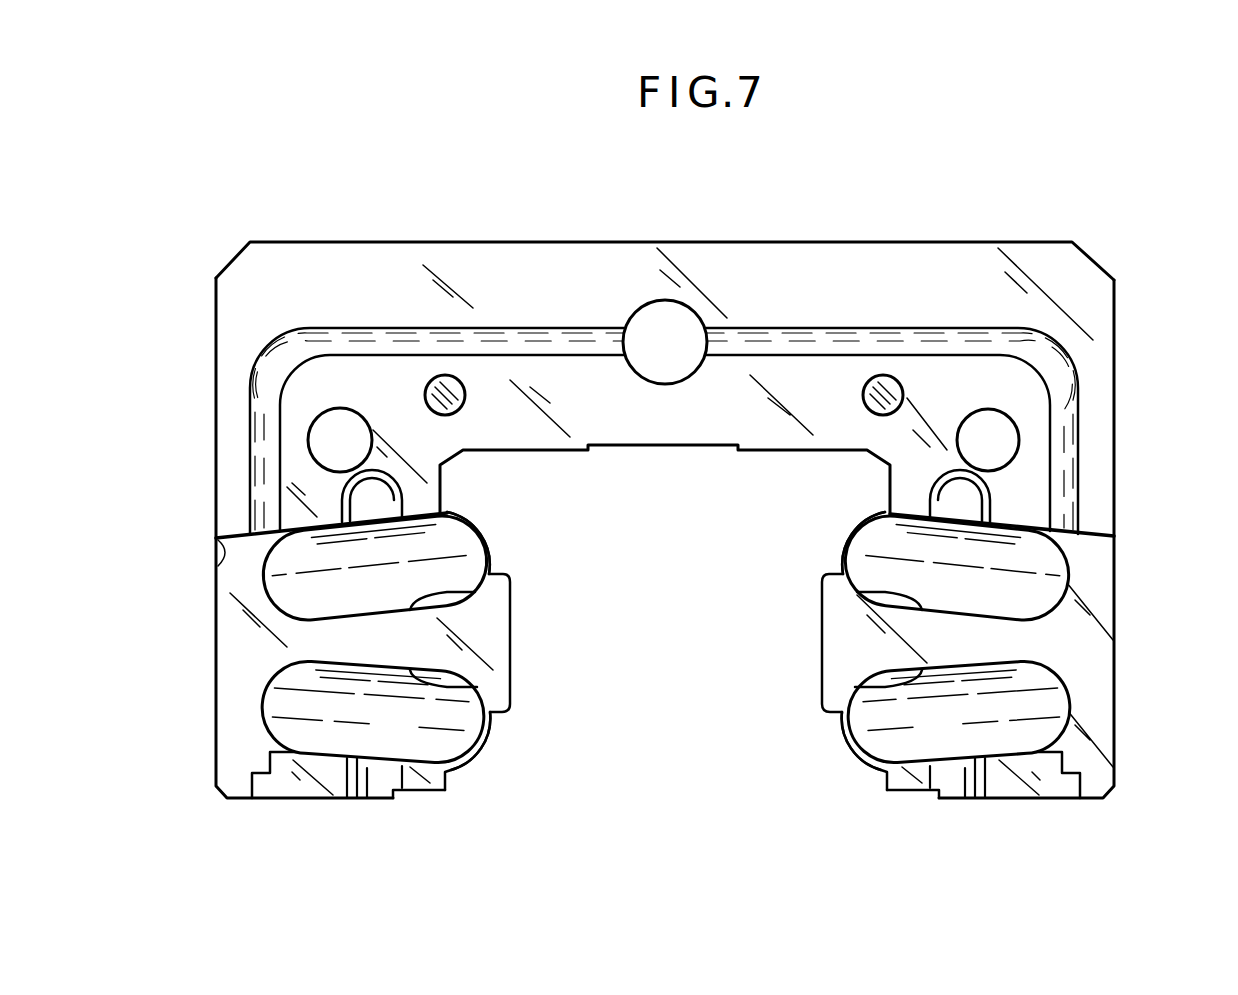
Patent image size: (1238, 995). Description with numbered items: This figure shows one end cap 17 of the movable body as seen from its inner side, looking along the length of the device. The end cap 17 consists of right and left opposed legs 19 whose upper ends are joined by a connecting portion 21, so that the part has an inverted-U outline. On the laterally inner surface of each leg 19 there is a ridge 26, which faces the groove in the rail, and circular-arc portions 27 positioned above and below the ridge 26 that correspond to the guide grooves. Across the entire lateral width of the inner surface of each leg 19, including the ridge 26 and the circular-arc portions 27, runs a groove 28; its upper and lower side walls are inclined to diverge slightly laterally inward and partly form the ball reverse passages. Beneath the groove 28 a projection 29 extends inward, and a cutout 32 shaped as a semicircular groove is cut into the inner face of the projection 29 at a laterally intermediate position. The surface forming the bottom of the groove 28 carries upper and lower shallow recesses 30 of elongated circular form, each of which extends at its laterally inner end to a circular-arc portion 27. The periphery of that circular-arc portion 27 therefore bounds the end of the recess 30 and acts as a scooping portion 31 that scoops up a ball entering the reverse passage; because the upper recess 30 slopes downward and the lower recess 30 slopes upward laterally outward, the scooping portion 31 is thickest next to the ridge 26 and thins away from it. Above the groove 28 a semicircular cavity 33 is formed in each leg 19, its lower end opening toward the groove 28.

The end cap 17 is at (706, 242).
The leg 19 is at (228, 450).
The connecting portion 21 is at (595, 251).
The ridge 26 is at (498, 643).
The circular-arc portion 27 is at (477, 520).
The groove 28 is at (218, 563).
The projection 29 is at (308, 782).
The recess 30 is at (475, 592).
The scooping portion 31 is at (487, 550).
The cutout 32 is at (355, 780).
The cavity 33 is at (342, 496).